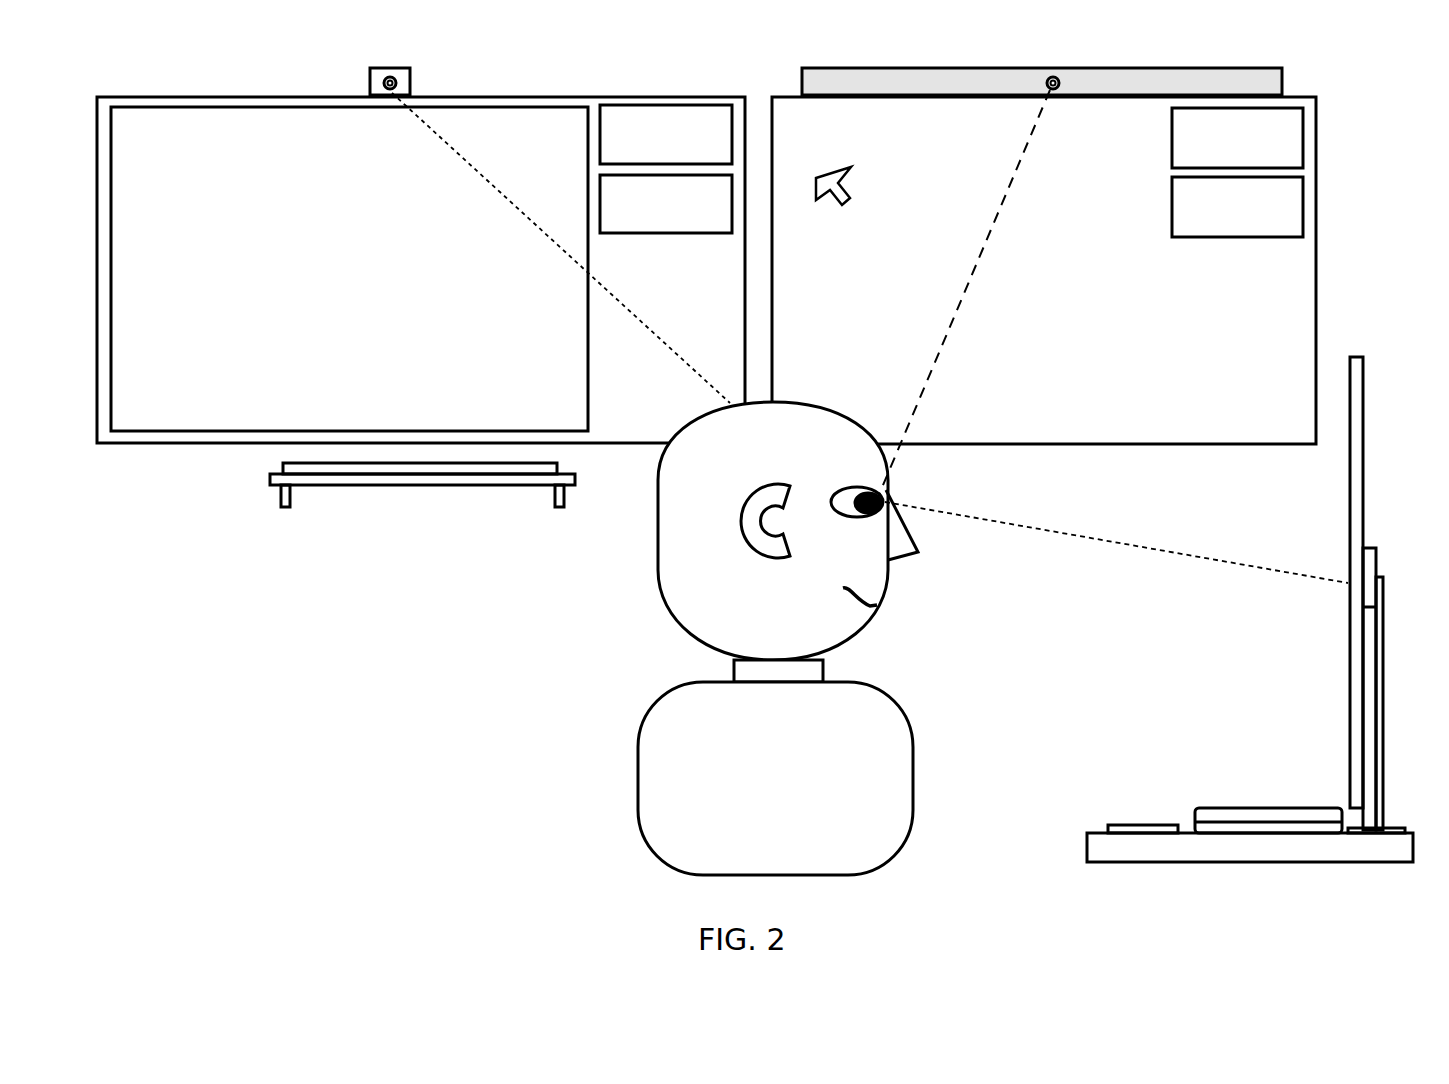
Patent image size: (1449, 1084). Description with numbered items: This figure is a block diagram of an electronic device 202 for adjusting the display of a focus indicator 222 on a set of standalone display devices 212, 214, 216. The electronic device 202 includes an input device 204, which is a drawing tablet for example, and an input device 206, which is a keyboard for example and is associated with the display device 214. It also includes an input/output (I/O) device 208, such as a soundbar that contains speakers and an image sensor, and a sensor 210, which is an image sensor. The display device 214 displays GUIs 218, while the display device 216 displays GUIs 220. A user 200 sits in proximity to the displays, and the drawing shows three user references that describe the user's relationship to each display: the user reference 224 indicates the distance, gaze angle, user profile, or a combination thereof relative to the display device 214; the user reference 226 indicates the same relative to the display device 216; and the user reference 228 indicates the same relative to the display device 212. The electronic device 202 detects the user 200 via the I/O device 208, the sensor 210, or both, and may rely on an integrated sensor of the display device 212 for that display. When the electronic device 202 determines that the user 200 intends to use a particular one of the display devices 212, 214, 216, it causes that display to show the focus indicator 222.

The user 200 is at (638, 778).
The electronic device 202 is at (1210, 807).
The input device 204 is at (1120, 824).
The input device 206 is at (283, 472).
The input/output (I/O) device 208 is at (800, 83).
The sensor 210 is at (369, 82).
The display device 212 is at (1364, 380).
The display device 214 is at (112, 96).
The display device 216 is at (1318, 135).
The GUIs 218 is at (600, 200).
The GUIs 220 is at (1172, 138).
The focus indicator 222 is at (856, 185).
The user reference 224 is at (660, 338).
The user reference 226 is at (955, 310).
The user reference 228 is at (1120, 540).